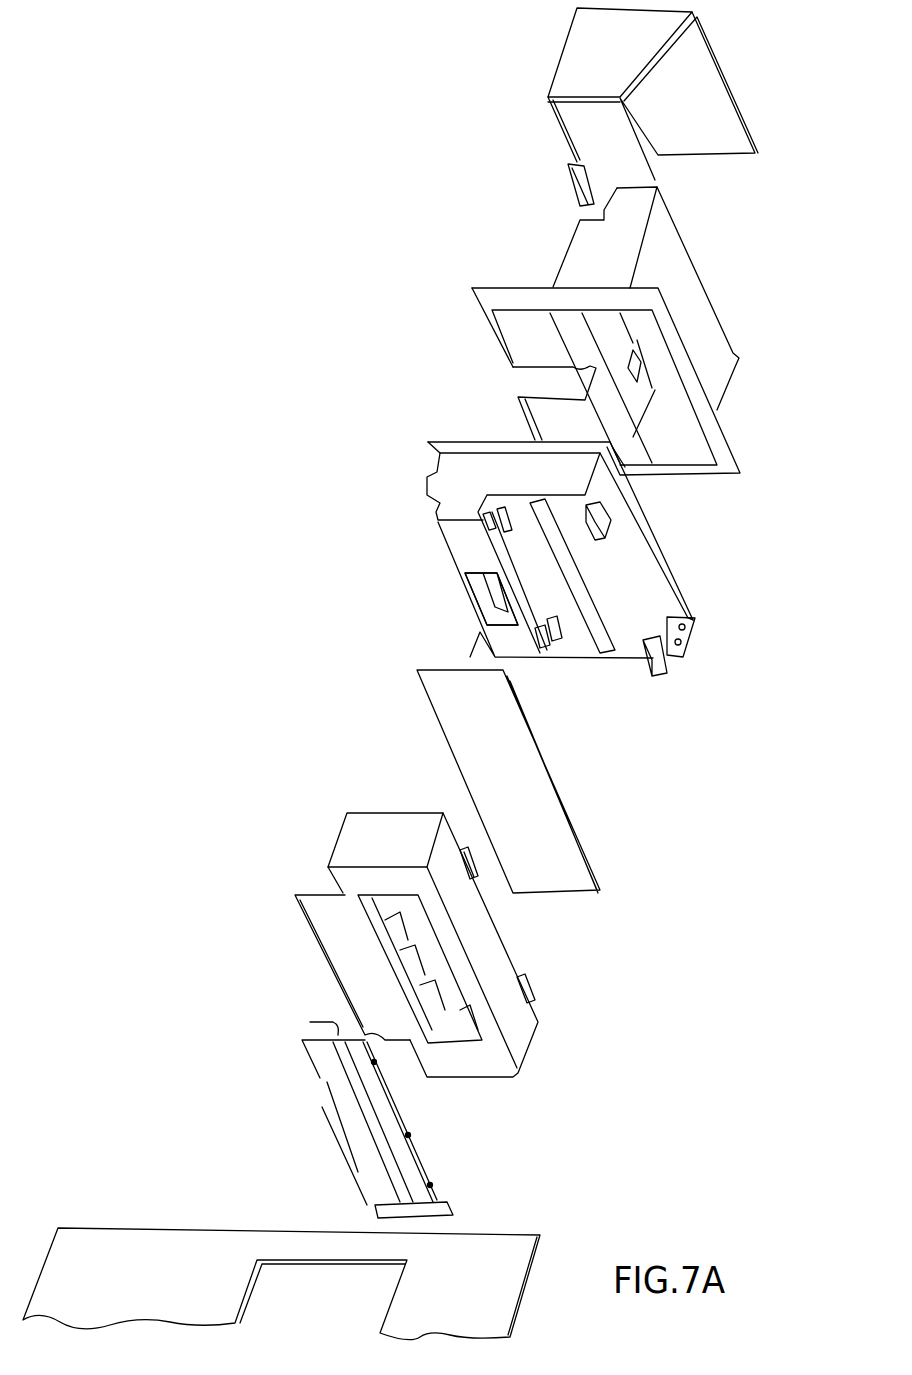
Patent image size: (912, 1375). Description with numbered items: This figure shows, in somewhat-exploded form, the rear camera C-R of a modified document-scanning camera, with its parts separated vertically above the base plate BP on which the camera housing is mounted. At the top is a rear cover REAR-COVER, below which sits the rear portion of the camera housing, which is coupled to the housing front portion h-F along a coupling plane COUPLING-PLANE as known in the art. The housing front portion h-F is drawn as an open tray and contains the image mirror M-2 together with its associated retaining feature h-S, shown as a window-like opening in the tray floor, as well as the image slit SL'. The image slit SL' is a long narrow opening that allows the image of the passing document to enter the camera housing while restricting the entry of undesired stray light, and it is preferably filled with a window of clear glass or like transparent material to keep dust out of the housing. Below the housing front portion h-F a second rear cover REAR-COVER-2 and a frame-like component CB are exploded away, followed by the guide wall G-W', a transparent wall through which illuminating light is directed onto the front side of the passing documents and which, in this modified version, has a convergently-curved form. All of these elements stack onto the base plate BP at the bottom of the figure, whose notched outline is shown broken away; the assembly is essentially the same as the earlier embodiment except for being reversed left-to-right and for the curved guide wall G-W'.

The rear camera C-R is at (180, 678).
The rear cover REAR-COVER is at (563, 70).
The coupling plane COUPLING-PLANE is at (500, 340).
The housing front portion h-F is at (658, 540).
The image mirror M-2 is at (463, 589).
The retaining feature h-S is at (491, 599).
The image slit SL' is at (663, 607).
The rear cover REAR-COVER-2 is at (580, 843).
The element CB is at (335, 845).
The guide wall G-W' is at (492, 1120).
The base plate BP is at (210, 1232).